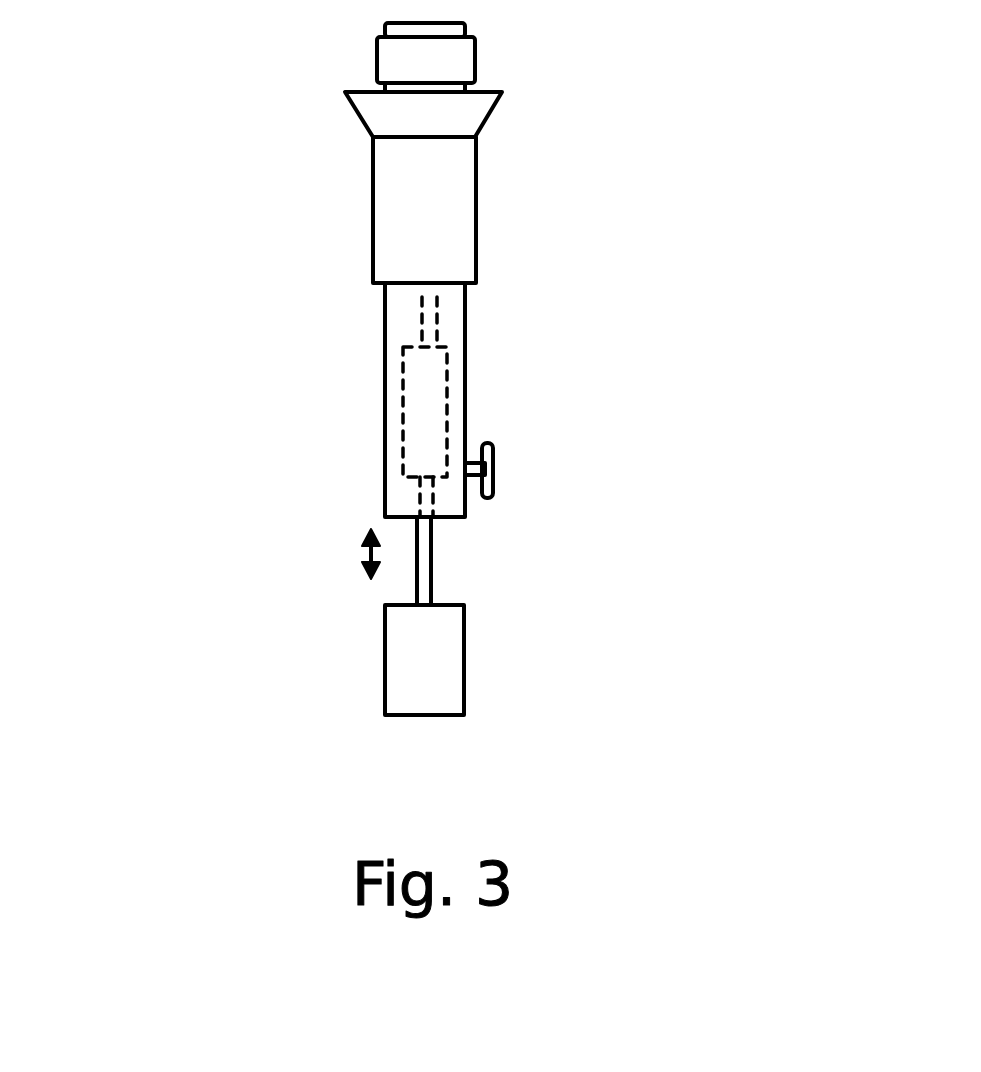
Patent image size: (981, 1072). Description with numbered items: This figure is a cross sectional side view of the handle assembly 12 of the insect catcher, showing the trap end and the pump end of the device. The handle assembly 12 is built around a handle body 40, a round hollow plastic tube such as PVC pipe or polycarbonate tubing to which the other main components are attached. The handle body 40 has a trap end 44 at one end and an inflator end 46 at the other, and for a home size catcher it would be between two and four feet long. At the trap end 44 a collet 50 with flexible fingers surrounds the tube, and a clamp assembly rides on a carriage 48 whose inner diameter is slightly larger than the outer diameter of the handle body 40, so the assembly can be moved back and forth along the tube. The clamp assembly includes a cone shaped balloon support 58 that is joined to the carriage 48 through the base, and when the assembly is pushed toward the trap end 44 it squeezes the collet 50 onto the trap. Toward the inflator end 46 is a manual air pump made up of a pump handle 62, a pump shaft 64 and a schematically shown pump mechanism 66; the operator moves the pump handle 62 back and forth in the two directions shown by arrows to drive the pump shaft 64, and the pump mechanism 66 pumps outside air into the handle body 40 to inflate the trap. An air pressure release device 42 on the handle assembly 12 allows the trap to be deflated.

The handle assembly 12 is at (193, 405).
The trap end 44 is at (282, 66).
The collet 50 is at (377, 57).
The cone shaped balloon support 58 is at (363, 115).
The carriage 48 is at (476, 200).
The handle body 40 is at (465, 335).
The pump mechanism 66 is at (423, 423).
The air pressure release device 42 is at (498, 468).
The pump shaft 64 is at (431, 560).
The pump handle 62 is at (464, 657).
The inflator end 46 is at (273, 522).